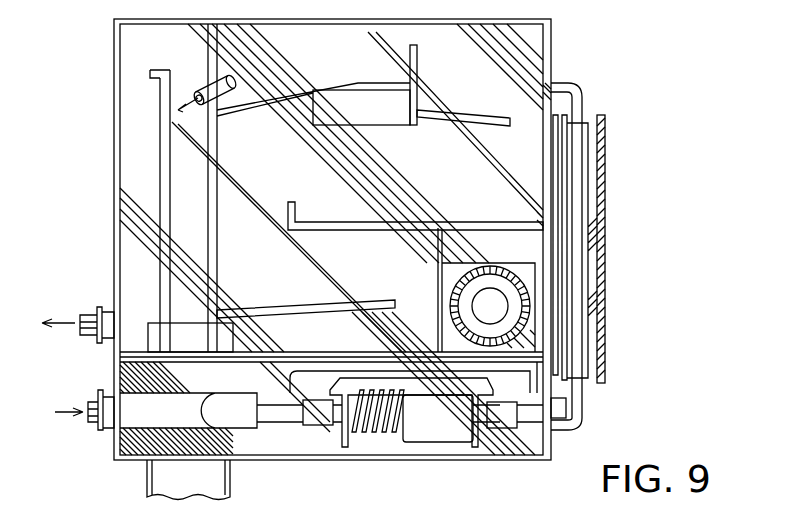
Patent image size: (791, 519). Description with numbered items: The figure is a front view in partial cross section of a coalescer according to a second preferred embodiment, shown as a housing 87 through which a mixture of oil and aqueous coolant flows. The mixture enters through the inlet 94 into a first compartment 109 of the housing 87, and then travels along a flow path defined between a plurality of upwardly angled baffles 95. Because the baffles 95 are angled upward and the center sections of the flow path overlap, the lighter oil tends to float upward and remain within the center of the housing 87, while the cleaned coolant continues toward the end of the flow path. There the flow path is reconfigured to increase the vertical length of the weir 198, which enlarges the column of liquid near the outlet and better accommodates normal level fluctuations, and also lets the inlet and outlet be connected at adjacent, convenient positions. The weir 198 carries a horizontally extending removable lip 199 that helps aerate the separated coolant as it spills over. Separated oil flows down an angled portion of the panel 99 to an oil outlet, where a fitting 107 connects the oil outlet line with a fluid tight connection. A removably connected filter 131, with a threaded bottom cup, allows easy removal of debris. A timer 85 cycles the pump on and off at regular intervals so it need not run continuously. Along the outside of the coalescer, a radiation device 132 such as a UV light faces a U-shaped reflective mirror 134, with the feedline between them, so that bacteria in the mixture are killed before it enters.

The timer 85 is at (493, 268).
The housing 87 is at (101, 216).
The inlet 94 is at (566, 86).
The angled baffles 95 is at (440, 113).
The panel 99 is at (358, 82).
The fitting 107 is at (230, 60).
The first compartment 109 is at (513, 55).
The filter 131 is at (233, 478).
The radiation device 132 is at (560, 166).
The U-shaped reflective mirror 134 is at (605, 205).
The weir 198 is at (160, 118).
The removable lip 199 is at (150, 72).